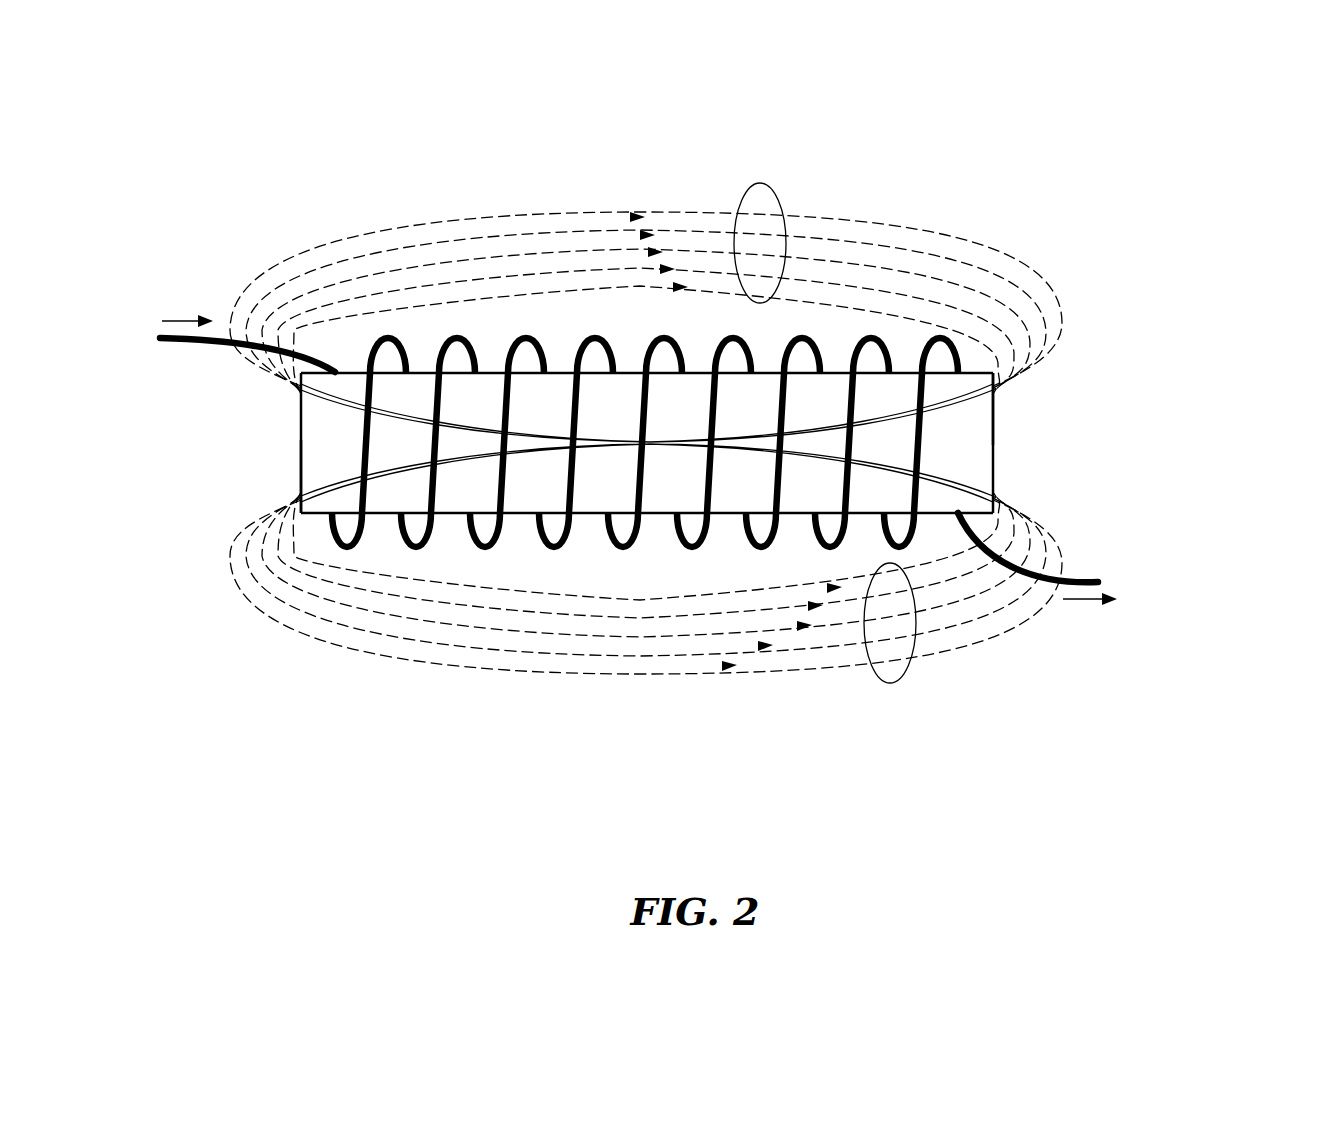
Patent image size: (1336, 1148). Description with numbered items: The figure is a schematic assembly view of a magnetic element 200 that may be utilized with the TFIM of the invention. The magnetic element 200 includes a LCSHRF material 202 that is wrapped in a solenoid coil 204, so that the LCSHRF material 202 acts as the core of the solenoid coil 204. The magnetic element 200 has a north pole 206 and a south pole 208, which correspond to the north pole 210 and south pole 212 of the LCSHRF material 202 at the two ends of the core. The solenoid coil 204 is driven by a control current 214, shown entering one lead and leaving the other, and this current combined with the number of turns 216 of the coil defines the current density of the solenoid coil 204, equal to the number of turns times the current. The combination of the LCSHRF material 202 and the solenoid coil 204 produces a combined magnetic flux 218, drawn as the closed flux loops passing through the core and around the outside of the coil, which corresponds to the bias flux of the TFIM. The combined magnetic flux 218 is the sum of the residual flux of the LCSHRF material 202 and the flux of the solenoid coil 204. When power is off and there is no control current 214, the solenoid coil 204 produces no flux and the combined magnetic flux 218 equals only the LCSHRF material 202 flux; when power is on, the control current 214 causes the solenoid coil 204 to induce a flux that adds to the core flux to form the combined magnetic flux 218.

The magnetic element 200 is at (1090, 211).
The LCSHRF material 202 is at (647, 443).
The solenoid coil 204 is at (690, 567).
The north pole 206 is at (255, 443).
The south pole 208 is at (1039, 443).
The north pole 210 is at (312, 460).
The south pole 212 is at (985, 435).
The control current 214 is at (1063, 650).
The turns 216 is at (899, 553).
The combined magnetic flux 218 is at (857, 732).